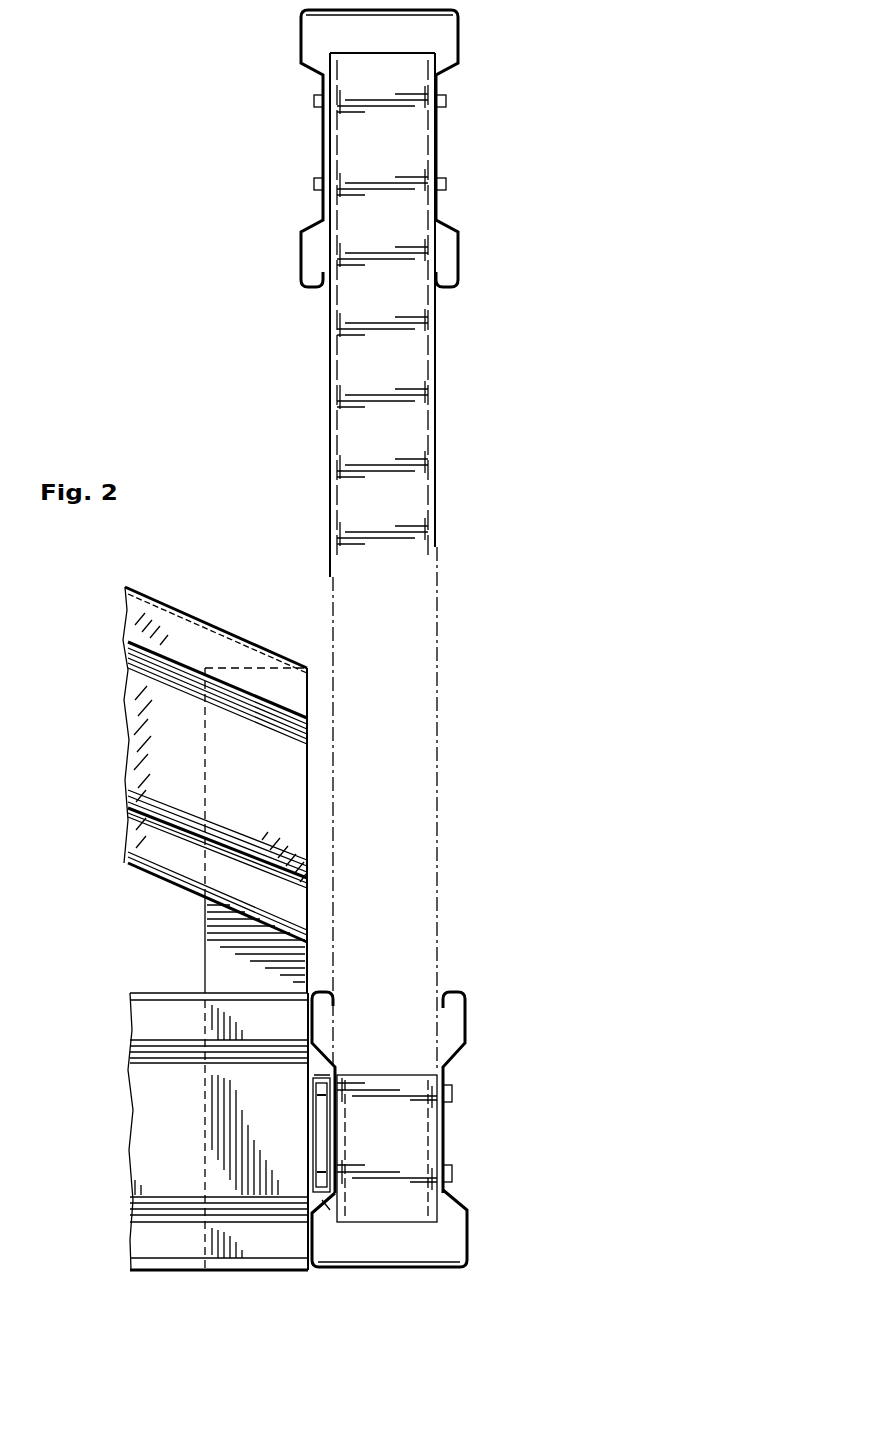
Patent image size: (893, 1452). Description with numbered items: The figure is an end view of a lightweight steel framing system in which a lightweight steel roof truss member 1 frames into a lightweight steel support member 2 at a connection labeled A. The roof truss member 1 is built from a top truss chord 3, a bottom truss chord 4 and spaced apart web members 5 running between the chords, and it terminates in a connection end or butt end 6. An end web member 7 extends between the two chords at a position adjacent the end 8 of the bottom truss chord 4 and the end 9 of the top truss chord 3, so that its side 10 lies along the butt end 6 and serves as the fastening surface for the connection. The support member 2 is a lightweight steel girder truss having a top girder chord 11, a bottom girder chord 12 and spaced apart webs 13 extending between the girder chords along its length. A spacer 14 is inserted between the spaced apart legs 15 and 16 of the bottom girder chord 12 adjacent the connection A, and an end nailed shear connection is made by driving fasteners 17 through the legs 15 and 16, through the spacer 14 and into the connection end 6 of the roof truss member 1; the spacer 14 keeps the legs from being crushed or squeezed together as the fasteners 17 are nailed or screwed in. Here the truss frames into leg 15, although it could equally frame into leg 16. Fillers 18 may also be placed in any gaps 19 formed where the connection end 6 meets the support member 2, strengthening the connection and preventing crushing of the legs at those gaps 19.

The lightweight steel roof truss member 1 is at (143, 1286).
The lightweight steel support member 2 is at (468, 368).
The top truss chord 3 is at (200, 637).
The bottom truss chord 4 is at (148, 1103).
The web members 5 is at (203, 930).
The connection end 6 is at (320, 862).
The end web member 7 is at (215, 955).
The end of the bottom truss chord 8 is at (335, 1065).
The end of the top truss chord 9 is at (308, 777).
The side of the end web member 10 is at (308, 965).
The top girder chord 11 is at (458, 19).
The bottom girder chord 12 is at (455, 1270).
The webs 13 is at (347, 368).
The spacer 14 is at (390, 1142).
The leg 15 is at (335, 1055).
The leg 16 is at (465, 1015).
The fasteners 17 is at (452, 1094).
The fillers 18 is at (320, 1143).
The gaps 19 is at (320, 1200).
The connection A is at (546, 1100).